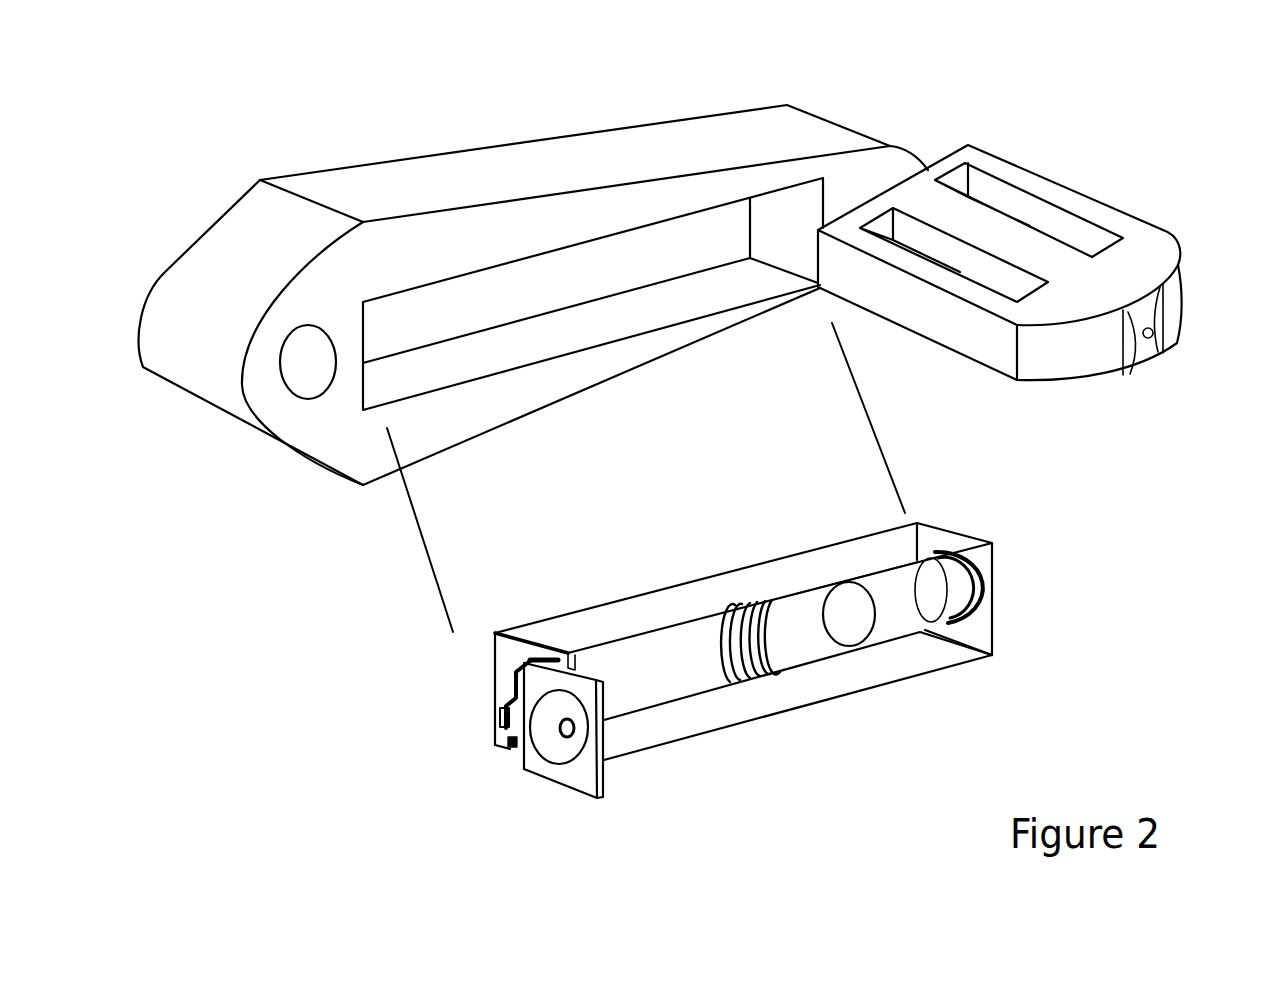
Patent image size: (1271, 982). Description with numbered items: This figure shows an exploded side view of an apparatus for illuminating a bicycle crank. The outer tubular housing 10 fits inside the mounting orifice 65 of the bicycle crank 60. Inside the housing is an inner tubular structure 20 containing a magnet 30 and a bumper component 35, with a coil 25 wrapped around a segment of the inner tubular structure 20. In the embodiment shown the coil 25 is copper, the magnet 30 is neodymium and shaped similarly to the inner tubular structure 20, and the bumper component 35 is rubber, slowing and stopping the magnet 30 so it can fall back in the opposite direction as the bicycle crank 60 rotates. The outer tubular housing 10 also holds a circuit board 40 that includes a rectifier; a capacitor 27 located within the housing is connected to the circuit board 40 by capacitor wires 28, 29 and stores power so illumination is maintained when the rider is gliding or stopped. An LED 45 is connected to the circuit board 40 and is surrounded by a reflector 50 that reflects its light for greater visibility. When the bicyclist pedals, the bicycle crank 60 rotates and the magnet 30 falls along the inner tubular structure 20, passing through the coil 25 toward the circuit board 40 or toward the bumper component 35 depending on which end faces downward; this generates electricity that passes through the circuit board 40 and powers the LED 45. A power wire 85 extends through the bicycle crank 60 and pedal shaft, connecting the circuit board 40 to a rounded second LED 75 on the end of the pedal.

The outer tubular housing 10 is at (727, 588).
The inner tubular structure 20 is at (657, 673).
The coil 25 is at (782, 648).
The capacitor 27 is at (500, 747).
The capacitor wire 28 is at (495, 733).
The capacitor wire 29 is at (525, 748).
The magnet 30 is at (925, 602).
The bumper component 35 is at (962, 592).
The circuit board 40 is at (508, 648).
The LED 45 is at (572, 732).
The reflector 50 is at (555, 753).
The bicycle crank 60 is at (397, 187).
The mounting orifice 65 is at (544, 282).
The second LED 75 is at (1150, 340).
The power wire 85 is at (993, 220).